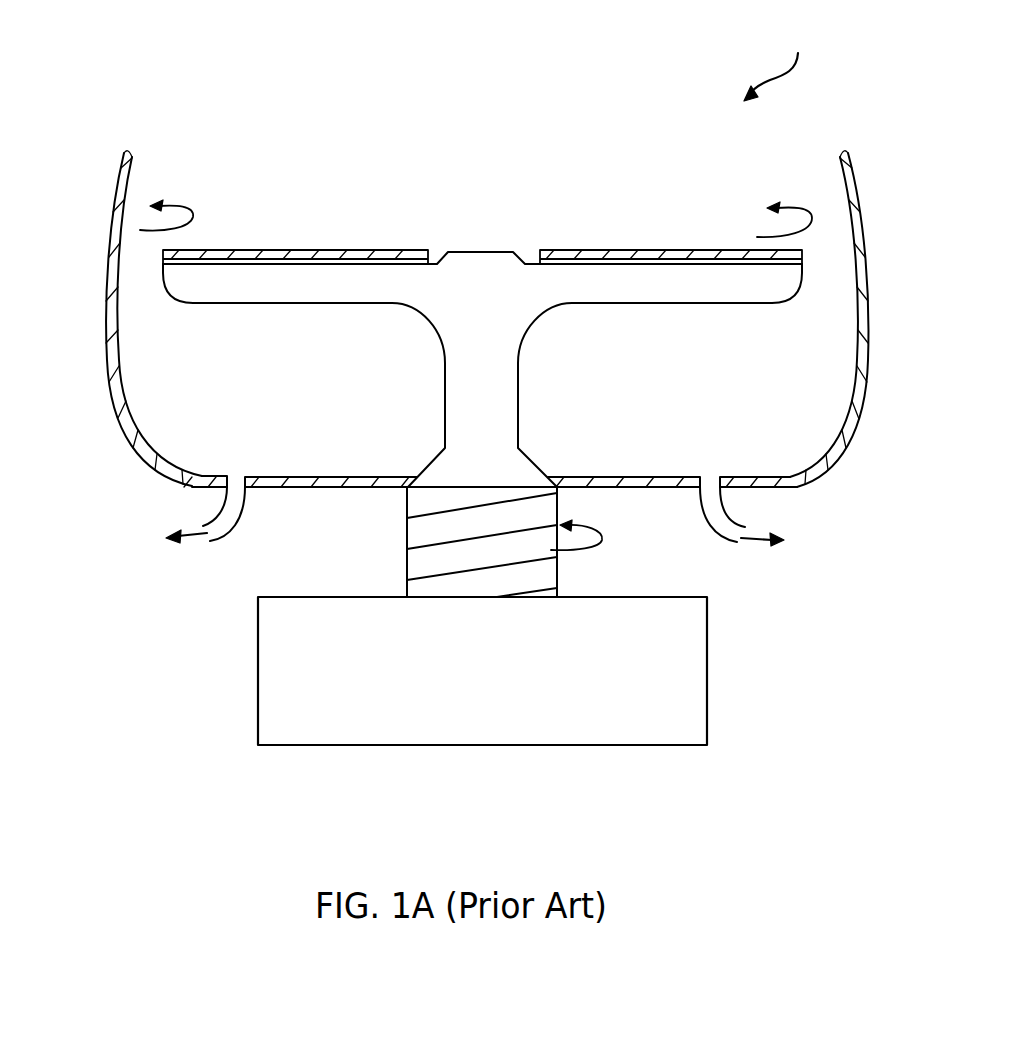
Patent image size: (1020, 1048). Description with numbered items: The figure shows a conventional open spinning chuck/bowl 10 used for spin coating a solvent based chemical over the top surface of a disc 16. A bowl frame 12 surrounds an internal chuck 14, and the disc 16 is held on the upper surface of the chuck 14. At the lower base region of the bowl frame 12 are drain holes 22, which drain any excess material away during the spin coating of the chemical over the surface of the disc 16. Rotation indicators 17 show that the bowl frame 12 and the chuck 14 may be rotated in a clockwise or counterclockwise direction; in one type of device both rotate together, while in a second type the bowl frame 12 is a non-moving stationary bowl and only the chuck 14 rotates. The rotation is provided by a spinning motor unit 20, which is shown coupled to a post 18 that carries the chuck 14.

The open spinning chuck/bowl 10 is at (783, 60).
The bowl frame 12 is at (110, 286).
The chuck 14 is at (656, 295).
The disc 16 is at (315, 250).
The rotation indicators 17 is at (190, 208).
The post 18 is at (414, 533).
The spinning motor unit 20 is at (677, 677).
The drain holes 22 is at (222, 509).